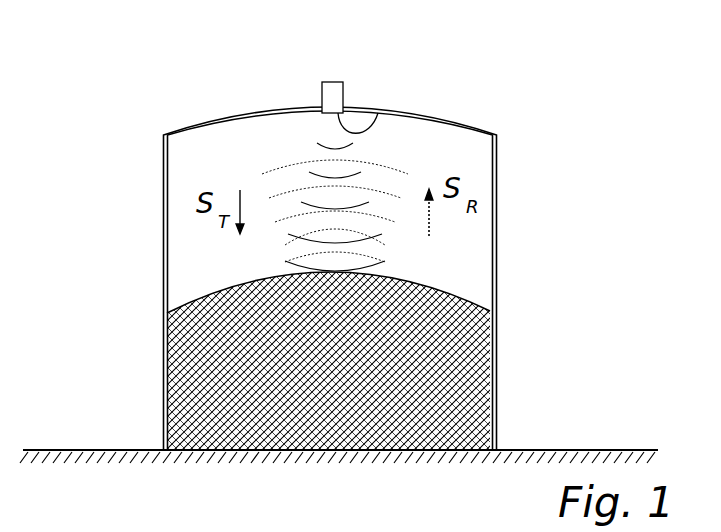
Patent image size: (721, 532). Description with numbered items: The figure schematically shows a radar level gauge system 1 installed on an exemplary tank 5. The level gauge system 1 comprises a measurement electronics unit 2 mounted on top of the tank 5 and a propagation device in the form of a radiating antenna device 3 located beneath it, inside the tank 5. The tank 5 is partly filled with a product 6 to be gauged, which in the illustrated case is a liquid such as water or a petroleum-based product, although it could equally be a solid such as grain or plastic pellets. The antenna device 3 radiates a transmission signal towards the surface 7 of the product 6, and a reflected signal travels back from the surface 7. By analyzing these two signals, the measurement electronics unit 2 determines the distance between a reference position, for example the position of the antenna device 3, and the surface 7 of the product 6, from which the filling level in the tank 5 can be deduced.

The level gauge system 1 is at (337, 78).
The measurement electronics unit 2 is at (322, 94).
The radiating antenna device 3 is at (378, 113).
The tank 5 is at (497, 170).
The product 6 is at (477, 357).
The surface 7 is at (462, 293).